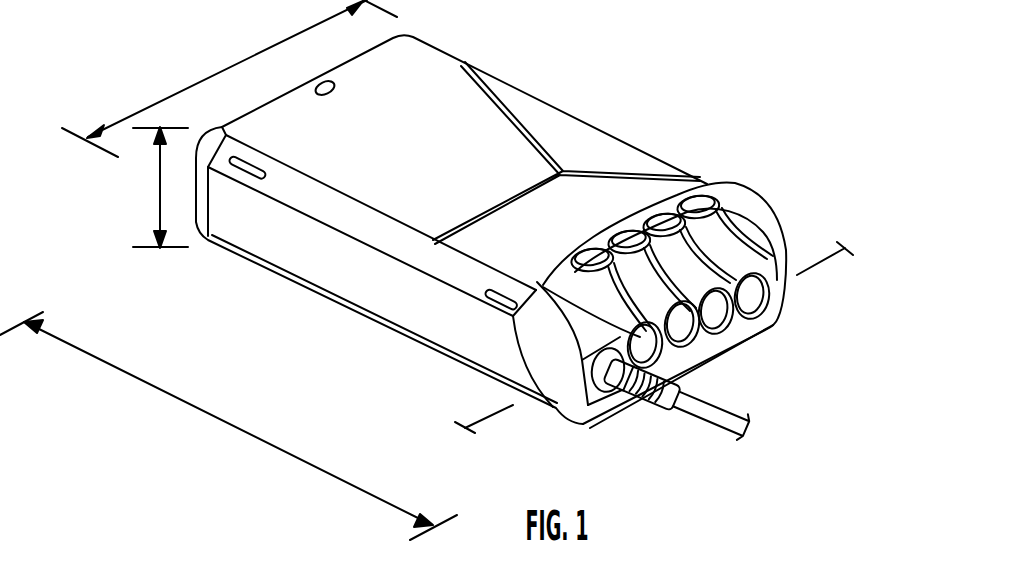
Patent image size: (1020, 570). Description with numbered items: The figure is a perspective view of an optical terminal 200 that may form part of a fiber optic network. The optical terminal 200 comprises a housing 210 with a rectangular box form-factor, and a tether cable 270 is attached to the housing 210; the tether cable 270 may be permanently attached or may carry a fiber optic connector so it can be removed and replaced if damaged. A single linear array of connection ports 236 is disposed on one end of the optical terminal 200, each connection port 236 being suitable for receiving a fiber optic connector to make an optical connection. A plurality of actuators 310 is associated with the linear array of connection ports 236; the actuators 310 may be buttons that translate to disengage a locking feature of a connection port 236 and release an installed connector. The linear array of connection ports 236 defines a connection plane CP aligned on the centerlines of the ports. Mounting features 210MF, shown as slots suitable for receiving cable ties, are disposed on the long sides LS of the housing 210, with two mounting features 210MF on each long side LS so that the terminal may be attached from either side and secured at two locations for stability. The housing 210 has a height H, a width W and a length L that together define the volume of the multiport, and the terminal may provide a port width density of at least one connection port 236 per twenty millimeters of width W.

The optical terminal 200 is at (442, 270).
The housing 210 is at (367, 308).
The mounting features 210MF is at (243, 173).
The connection ports 236 is at (665, 318).
The tether cable 270 is at (708, 408).
The actuators 310 is at (702, 203).
The long side LS is at (612, 130).
The connection plane CP is at (660, 355).
The width W is at (222, 71).
The height H is at (160, 187).
The length L is at (165, 394).